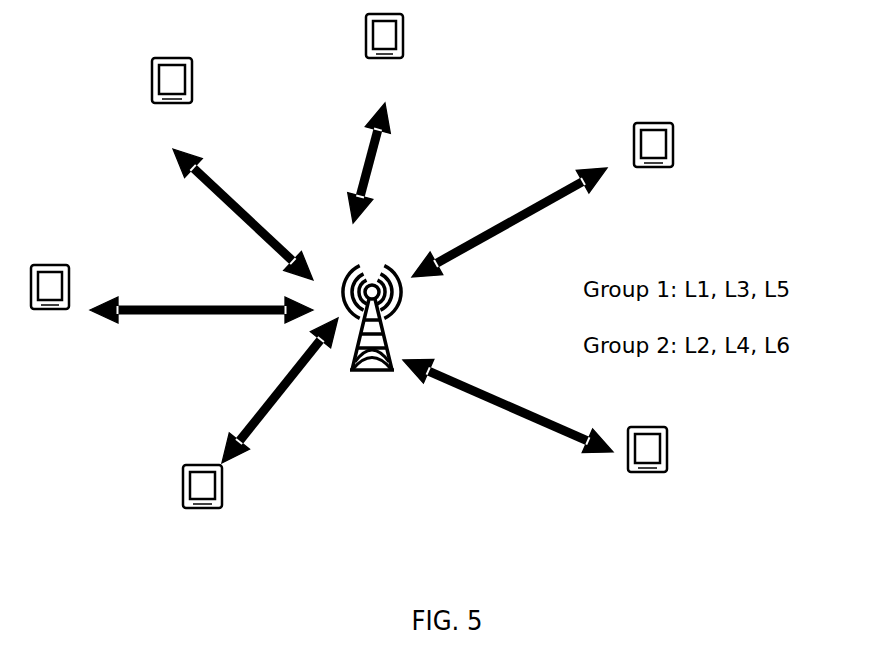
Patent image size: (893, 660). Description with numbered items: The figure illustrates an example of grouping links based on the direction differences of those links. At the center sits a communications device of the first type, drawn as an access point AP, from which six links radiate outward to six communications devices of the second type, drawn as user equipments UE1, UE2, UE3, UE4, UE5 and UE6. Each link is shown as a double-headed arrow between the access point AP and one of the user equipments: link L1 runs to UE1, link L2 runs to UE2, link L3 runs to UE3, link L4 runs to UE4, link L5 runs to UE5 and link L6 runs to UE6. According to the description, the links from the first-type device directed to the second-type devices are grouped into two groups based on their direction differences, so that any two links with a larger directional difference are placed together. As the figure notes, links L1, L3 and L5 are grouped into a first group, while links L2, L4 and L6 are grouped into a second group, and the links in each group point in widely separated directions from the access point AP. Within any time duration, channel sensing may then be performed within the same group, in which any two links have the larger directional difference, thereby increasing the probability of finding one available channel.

The access point AP is at (372, 302).
The user equipment 1 UE1 is at (653, 162).
The user equipment 2 UE2 is at (649, 467).
The user equipment 3 UE3 is at (202, 504).
The user equipment 4 UE4 is at (57, 304).
The user equipment 5 UE5 is at (172, 96).
The user equipment 6 UE6 is at (384, 53).
The link L1 is at (510, 223).
The link L2 is at (508, 406).
The link L3 is at (280, 390).
The link L4 is at (201, 300).
The link L5 is at (243, 215).
The link L6 is at (363, 163).